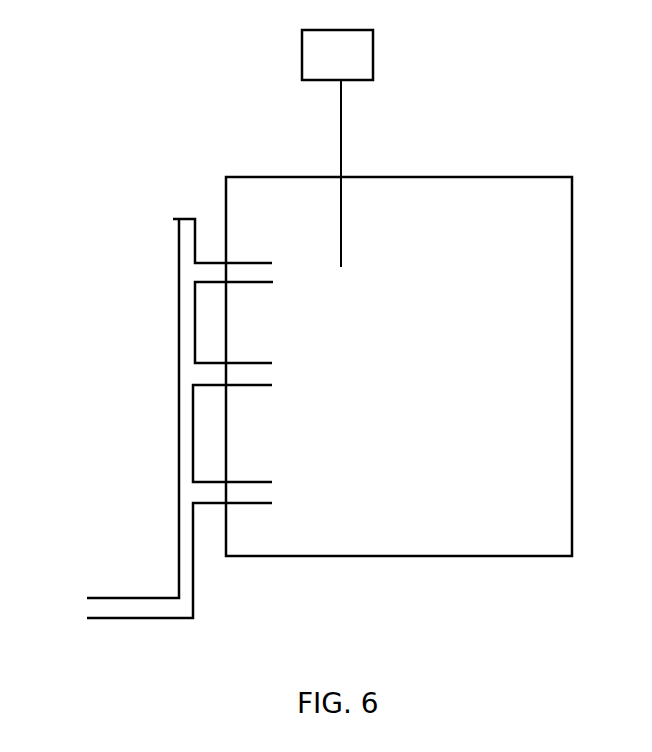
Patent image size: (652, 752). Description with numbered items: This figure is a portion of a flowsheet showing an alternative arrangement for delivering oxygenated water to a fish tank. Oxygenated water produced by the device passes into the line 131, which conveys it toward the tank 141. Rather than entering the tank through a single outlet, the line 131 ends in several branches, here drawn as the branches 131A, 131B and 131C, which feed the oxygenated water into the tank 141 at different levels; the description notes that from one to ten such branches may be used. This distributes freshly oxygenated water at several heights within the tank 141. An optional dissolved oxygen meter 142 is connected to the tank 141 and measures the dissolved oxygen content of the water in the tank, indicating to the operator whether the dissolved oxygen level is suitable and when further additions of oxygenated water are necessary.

The line 131 is at (179, 418).
The branch 131A is at (240, 253).
The branch 131B is at (238, 353).
The branch 131C is at (240, 475).
The tank 141 is at (399, 366).
The dissolved oxygen meter 142 is at (337, 148).